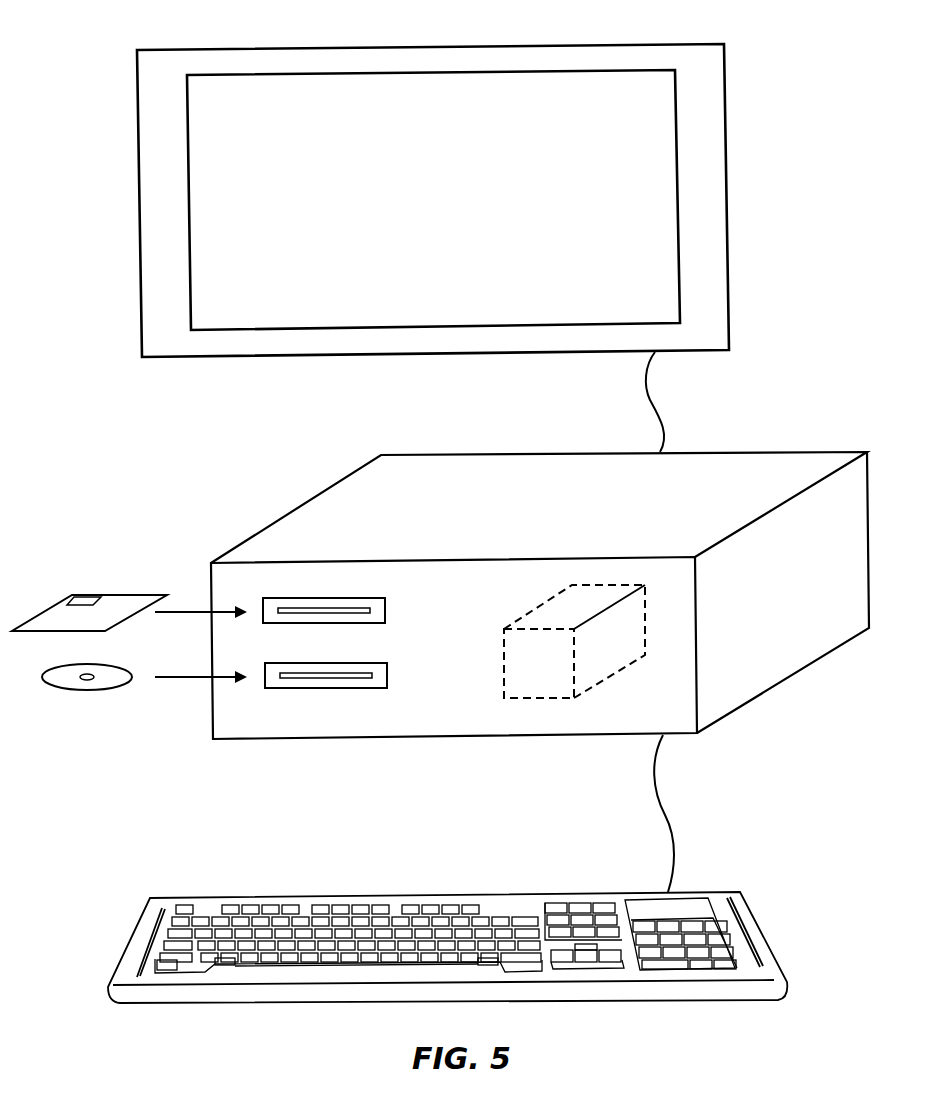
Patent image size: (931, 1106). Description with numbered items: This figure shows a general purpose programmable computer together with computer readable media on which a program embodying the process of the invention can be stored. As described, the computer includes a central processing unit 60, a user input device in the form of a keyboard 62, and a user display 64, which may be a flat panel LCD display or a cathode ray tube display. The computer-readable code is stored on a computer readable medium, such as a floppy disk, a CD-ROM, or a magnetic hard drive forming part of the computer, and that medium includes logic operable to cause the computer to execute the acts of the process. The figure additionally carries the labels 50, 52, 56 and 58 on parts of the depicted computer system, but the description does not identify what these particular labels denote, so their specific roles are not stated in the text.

The computer system unit 50 is at (790, 452).
The display monitor 52 is at (656, 44).
The disk drive 56 is at (358, 663).
The floppy disk drive 58 is at (357, 598).
The central processing unit 60 is at (503, 641).
The keyboard 62 is at (124, 666).
The user display 64 is at (120, 595).